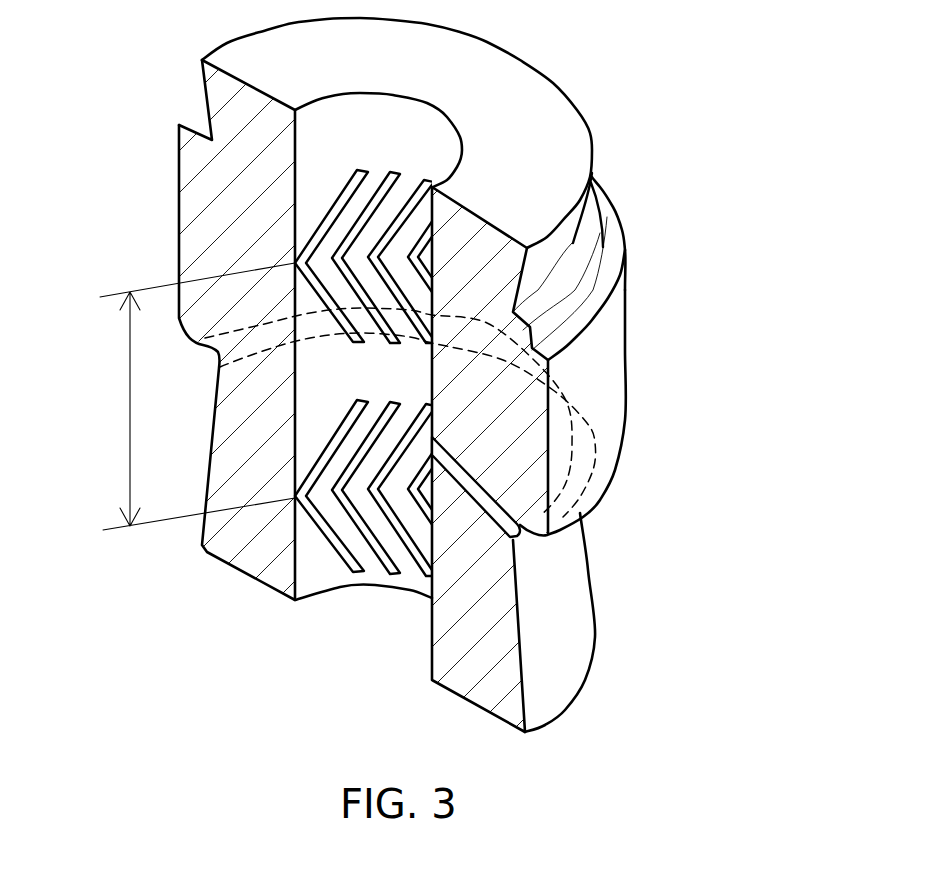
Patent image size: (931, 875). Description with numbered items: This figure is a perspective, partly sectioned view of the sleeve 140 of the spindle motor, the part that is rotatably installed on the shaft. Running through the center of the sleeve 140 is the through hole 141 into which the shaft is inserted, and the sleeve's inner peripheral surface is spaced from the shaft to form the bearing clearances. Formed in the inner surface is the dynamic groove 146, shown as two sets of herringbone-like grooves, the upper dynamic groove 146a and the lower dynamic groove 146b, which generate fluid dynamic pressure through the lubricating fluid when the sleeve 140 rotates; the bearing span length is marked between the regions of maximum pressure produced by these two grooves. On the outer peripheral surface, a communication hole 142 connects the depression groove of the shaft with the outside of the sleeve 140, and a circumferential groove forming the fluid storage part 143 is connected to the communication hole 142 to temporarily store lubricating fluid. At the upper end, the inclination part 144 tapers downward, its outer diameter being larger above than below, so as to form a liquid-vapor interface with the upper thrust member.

The sleeve 140 is at (465, 385).
The through hole 141 is at (402, 613).
The communication hole 142 is at (483, 500).
The fluid storage part 143 is at (528, 540).
The inclination part 144 is at (200, 90).
The dynamic groove 146 is at (588, 354).
The upper dynamic groove 146a is at (373, 207).
The lower dynamic groove 146b is at (350, 422).